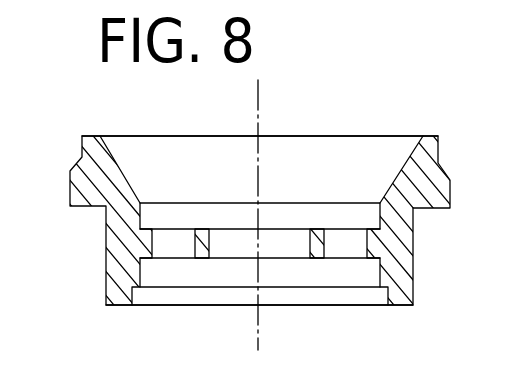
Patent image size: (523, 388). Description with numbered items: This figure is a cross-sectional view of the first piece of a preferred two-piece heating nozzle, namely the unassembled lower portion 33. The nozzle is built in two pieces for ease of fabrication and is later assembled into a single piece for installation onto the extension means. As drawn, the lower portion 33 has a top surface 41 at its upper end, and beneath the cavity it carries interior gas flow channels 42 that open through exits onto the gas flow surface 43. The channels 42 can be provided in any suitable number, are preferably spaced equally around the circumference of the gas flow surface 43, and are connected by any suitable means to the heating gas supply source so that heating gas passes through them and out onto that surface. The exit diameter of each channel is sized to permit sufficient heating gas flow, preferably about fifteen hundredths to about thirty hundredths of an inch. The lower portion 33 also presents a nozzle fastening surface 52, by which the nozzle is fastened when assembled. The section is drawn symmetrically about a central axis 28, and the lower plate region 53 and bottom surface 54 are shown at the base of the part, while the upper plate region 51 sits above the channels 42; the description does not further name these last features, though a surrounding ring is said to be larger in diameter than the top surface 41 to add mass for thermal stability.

The central axis 28 is at (258, 123).
The lower portion 33 is at (93, 176).
The top surface 41 is at (91, 136).
The interior gas flow channels 42 is at (208, 233).
The gas flow surface 43 is at (171, 229).
The upper plate 51 is at (130, 221).
The nozzle fastening surface 52 is at (358, 262).
The lower plate 53 is at (130, 272).
The bottom surface 54 is at (278, 308).